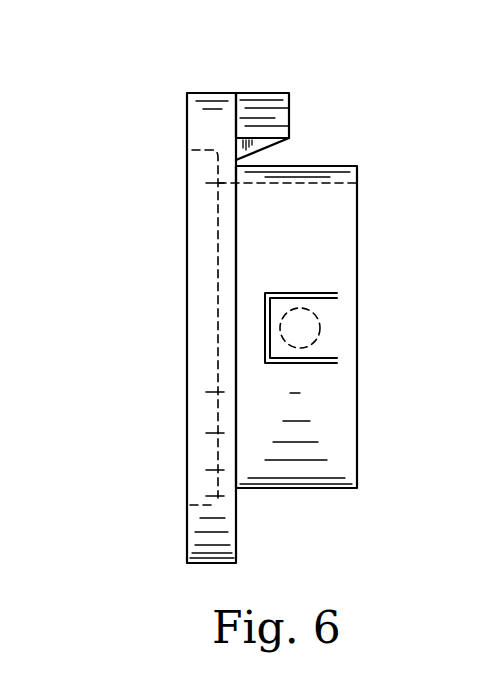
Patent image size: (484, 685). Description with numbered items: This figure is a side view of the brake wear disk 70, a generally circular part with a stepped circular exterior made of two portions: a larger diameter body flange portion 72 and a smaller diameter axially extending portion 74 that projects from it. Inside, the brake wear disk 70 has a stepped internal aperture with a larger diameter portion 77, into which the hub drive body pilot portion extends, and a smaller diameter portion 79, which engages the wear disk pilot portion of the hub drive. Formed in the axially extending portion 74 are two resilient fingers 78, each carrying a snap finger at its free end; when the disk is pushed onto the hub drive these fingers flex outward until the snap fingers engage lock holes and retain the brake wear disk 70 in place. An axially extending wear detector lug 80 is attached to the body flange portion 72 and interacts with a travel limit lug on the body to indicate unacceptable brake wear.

The brake wear disk 70 is at (190, 81).
The body flange portion 72 is at (237, 540).
The axially extending portion 74 is at (322, 166).
The larger diameter portion 77 is at (205, 152).
The resilient fingers 78 is at (285, 328).
The smaller diameter portion 79 is at (317, 184).
The wear detector lug 80 is at (263, 98).